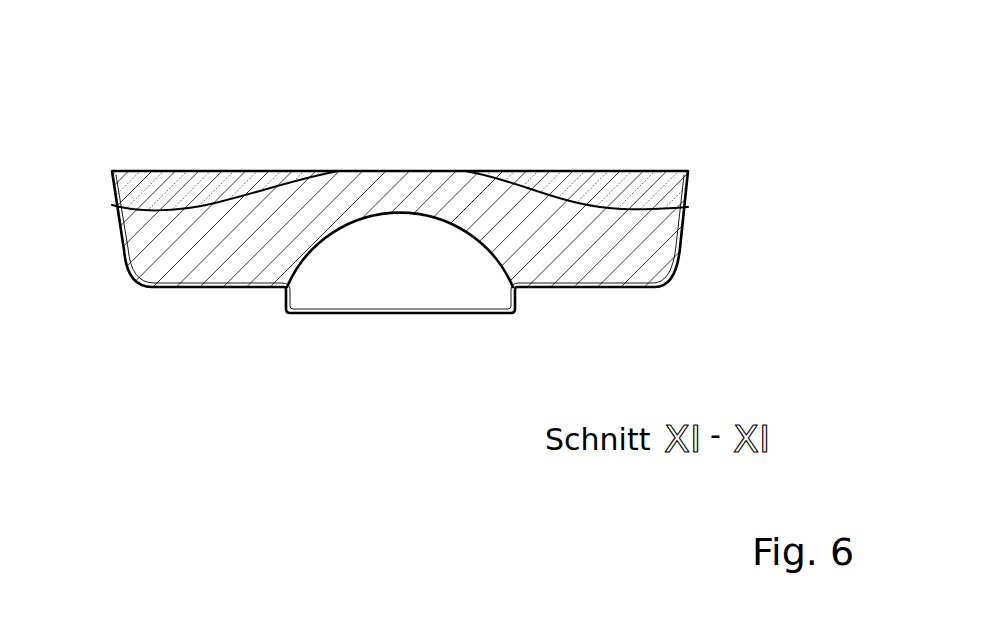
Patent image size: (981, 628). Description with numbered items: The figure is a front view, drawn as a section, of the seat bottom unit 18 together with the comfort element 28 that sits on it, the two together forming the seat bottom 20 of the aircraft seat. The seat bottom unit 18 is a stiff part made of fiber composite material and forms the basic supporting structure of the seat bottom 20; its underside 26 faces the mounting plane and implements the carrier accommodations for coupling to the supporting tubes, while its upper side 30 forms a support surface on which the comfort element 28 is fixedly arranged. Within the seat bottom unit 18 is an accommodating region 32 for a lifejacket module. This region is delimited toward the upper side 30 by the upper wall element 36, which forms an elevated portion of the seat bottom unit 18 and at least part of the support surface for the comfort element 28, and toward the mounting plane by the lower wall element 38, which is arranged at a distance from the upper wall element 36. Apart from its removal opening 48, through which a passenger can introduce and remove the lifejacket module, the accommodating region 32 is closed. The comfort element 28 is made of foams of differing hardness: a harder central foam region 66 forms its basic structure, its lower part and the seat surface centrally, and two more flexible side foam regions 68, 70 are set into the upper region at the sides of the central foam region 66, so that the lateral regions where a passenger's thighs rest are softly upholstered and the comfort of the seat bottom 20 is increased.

The seat bottom unit 18 is at (687, 227).
The seat bottom 20 is at (638, 115).
The underside 26 is at (226, 289).
The comfort element 28 is at (180, 200).
The upper side 30 is at (259, 248).
The accommodating region 32 is at (389, 262).
The upper wall element 36 is at (405, 200).
The lower wall element 38 is at (458, 315).
The removal opening 48 is at (505, 245).
The central foam region 66 is at (483, 200).
The side foam region 68 is at (130, 193).
The side foam region 70 is at (663, 183).